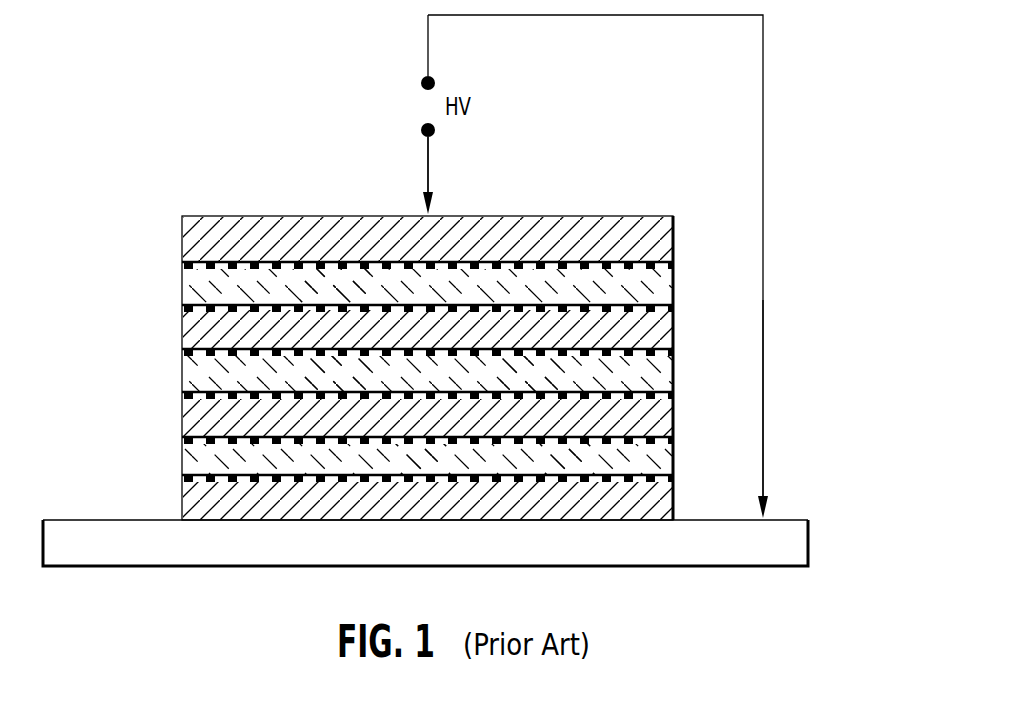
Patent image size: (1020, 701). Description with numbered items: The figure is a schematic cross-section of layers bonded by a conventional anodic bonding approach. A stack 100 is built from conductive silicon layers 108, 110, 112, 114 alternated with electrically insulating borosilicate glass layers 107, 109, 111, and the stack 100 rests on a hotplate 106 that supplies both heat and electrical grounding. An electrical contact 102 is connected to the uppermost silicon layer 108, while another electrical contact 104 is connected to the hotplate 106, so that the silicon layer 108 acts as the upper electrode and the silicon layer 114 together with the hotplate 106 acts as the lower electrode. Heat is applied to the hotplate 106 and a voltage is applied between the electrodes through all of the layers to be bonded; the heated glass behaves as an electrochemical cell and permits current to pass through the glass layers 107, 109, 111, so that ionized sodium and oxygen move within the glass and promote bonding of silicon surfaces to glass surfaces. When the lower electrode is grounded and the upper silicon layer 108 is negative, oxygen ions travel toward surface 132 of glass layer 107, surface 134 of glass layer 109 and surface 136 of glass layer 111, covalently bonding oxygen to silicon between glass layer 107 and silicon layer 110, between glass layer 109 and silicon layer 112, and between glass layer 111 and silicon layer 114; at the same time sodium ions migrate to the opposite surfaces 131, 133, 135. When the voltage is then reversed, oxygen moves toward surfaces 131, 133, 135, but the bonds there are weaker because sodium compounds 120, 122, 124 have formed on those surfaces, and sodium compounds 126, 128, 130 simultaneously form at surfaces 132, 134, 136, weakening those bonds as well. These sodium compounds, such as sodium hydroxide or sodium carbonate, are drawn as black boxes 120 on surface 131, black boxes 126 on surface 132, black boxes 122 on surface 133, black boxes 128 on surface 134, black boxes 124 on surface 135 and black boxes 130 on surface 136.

The stack 100 is at (580, 182).
The electrical contact 102 is at (434, 194).
The electrical contact 104 is at (770, 516).
The hotplate 106 is at (808, 540).
The glass layer 107 is at (673, 277).
The silicon layer 108 is at (182, 236).
The glass layer 109 is at (673, 363).
The silicon layer 110 is at (182, 323).
The glass layer 111 is at (673, 448).
The silicon layer 112 is at (182, 412).
The silicon layer 114 is at (182, 497).
The sodium compounds 120 is at (288, 262).
The sodium compounds 122 is at (310, 364).
The sodium compounds 124 is at (405, 448).
The sodium compounds 126 is at (318, 303).
The sodium compounds 128 is at (512, 387).
The sodium compounds 130 is at (548, 478).
The surface 131 is at (673, 257).
The surface 132 is at (182, 292).
The surface 133 is at (673, 343).
The surface 134 is at (182, 378).
The surface 135 is at (673, 450).
The surface 136 is at (182, 468).